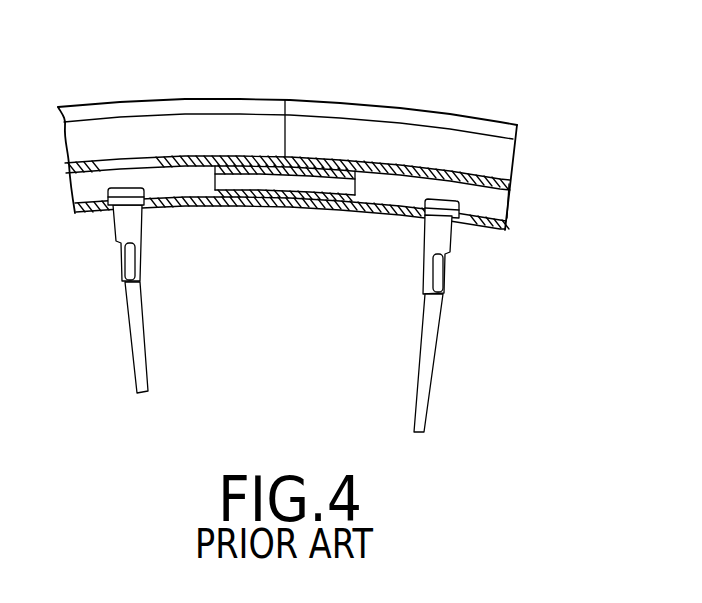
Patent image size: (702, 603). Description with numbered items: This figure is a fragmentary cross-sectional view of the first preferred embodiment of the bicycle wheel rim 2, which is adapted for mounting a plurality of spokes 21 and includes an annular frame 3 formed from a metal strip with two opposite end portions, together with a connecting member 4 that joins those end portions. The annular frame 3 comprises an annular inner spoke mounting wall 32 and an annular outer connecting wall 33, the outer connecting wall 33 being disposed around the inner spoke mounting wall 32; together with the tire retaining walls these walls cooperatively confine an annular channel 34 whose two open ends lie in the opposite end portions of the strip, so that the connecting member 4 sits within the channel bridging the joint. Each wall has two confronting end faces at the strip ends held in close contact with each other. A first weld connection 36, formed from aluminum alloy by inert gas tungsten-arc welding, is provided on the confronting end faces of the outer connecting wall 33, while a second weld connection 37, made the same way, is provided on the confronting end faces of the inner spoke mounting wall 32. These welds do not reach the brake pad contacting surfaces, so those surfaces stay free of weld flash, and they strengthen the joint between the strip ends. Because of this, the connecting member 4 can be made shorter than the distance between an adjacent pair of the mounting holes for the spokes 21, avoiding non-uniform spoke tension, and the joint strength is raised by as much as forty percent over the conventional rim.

The bicycle wheel rim 2 is at (424, 96).
The annular frame 3 is at (322, 108).
The outer connecting wall 33 is at (490, 176).
The first weld connection 36 is at (290, 155).
The connecting member 4 is at (251, 193).
The second weld connection 37 is at (288, 200).
The inner spoke mounting wall 32 is at (487, 227).
The annular channel 34 is at (495, 207).
The spokes 21 is at (427, 363).